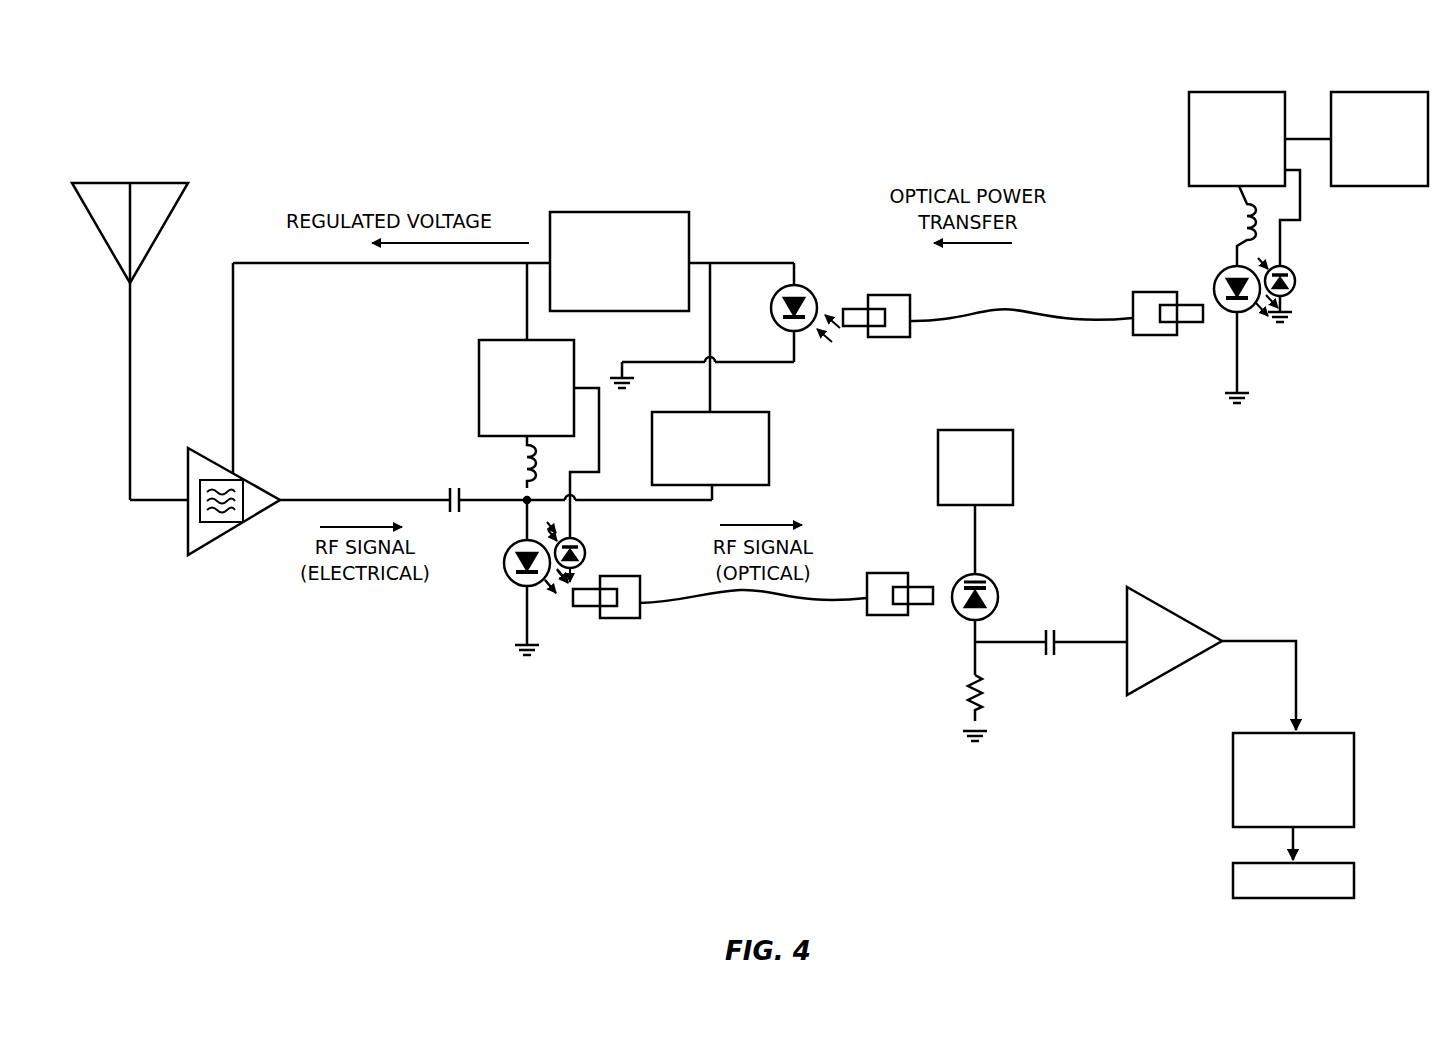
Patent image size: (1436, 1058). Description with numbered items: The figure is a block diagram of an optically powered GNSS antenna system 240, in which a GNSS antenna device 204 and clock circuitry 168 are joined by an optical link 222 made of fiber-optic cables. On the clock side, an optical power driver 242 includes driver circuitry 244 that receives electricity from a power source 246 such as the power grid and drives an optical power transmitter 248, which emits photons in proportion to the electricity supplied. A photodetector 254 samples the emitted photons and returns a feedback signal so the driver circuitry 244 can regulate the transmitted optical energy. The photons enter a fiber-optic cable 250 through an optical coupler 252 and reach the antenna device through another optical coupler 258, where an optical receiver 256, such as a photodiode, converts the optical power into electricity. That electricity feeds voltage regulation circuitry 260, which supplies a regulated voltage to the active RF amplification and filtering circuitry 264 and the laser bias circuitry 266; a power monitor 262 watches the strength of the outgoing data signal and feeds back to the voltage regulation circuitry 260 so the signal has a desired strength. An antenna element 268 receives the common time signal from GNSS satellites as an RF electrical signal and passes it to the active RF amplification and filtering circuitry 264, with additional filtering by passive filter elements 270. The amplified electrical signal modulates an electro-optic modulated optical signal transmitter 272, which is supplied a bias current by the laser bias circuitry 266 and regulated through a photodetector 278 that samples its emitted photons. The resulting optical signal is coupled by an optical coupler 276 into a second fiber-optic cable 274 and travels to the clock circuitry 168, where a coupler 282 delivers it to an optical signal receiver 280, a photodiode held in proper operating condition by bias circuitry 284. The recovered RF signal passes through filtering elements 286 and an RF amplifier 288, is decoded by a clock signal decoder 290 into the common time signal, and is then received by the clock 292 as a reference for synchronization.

The GNSS antenna device 204 is at (278, 106).
The optically powered GNSS antenna system 240 is at (190, 732).
The antenna element 268 is at (170, 212).
The active RF amplification and filtering circuitry 264 is at (262, 488).
The passive filter elements 270 is at (519, 466).
The voltage regulation circuitry 260 is at (622, 212).
The laser bias circuitry 266 is at (479, 388).
The electro-optic modulated optical signal transmitter 272 is at (505, 560).
The photodetector 278 is at (585, 547).
The optical receiver 256 is at (812, 290).
The power monitor 262 is at (769, 448).
The optical coupler 276 is at (628, 578).
The second fiber-optic cable 274 is at (718, 597).
The optical link 222 is at (828, 536).
The clock circuitry 168 is at (900, 665).
The coupler 282 is at (892, 573).
The bias circuitry 284 is at (1013, 465).
The optical signal receiver 280 is at (998, 597).
The filtering elements 286 is at (1052, 622).
The RF amplifier 288 is at (1175, 613).
The clock signal decoder 290 is at (1233, 778).
The clock 292 is at (1233, 878).
The optical coupler 258 is at (890, 295).
The fiber-optic cable 250 is at (1022, 312).
The optical coupler 252 is at (1158, 292).
The optical power driver 242 is at (1212, 72).
The driver circuitry 244 is at (1233, 92).
The power source 246 is at (1378, 92).
The optical power transmitter 248 is at (1220, 268).
The photodetector 254 is at (1297, 276).